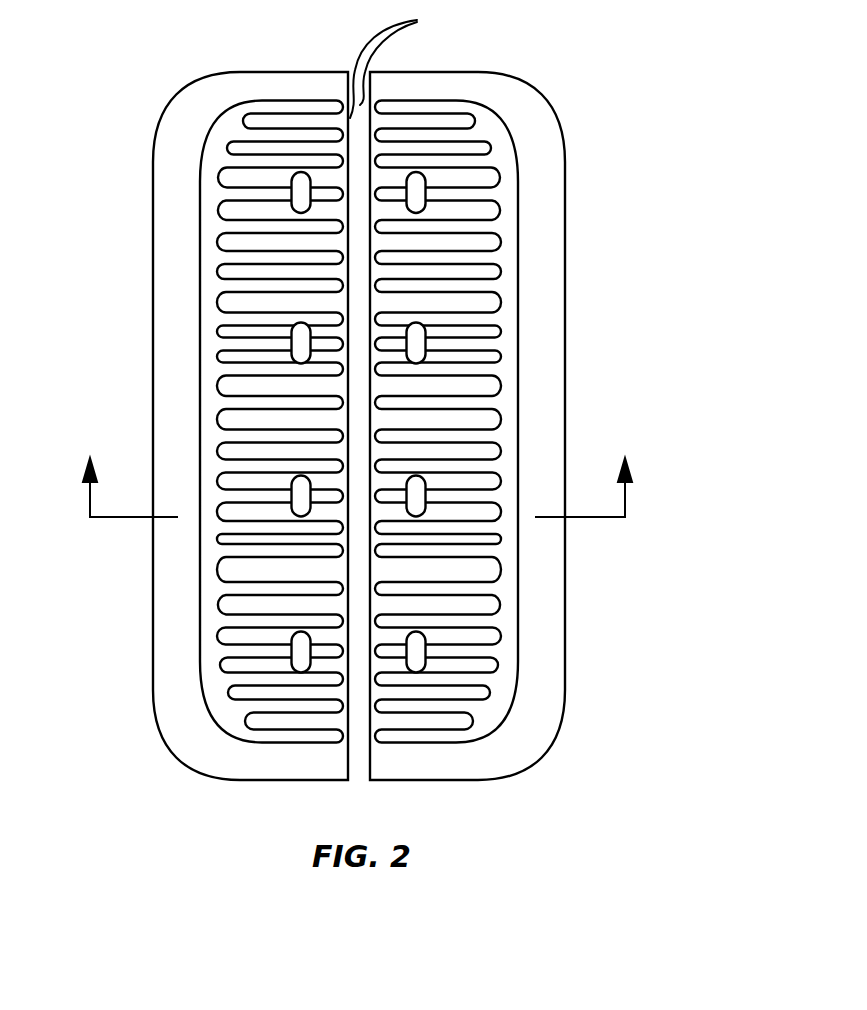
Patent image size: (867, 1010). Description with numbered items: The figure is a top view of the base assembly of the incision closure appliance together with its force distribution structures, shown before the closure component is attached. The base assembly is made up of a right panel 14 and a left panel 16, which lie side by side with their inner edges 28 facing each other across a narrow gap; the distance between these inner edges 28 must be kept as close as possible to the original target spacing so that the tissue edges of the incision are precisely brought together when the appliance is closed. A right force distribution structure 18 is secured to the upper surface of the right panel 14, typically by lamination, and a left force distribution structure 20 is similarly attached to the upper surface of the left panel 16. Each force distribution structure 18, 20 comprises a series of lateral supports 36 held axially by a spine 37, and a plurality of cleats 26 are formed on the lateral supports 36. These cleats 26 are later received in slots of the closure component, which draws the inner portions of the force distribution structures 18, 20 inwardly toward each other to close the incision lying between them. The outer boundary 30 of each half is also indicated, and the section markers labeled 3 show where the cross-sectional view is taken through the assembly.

The right panel 14 is at (366, 407).
The left panel 16 is at (187, 732).
The right force distribution structure 18 is at (507, 633).
The left force distribution structure 20 is at (212, 632).
The cleats 26 is at (417, 195).
The inner edges 28 is at (402, 64).
The outer wall 30 is at (153, 318).
The lateral supports 36 is at (258, 499).
The spine 37 is at (203, 352).
The section line 3 is at (358, 470).